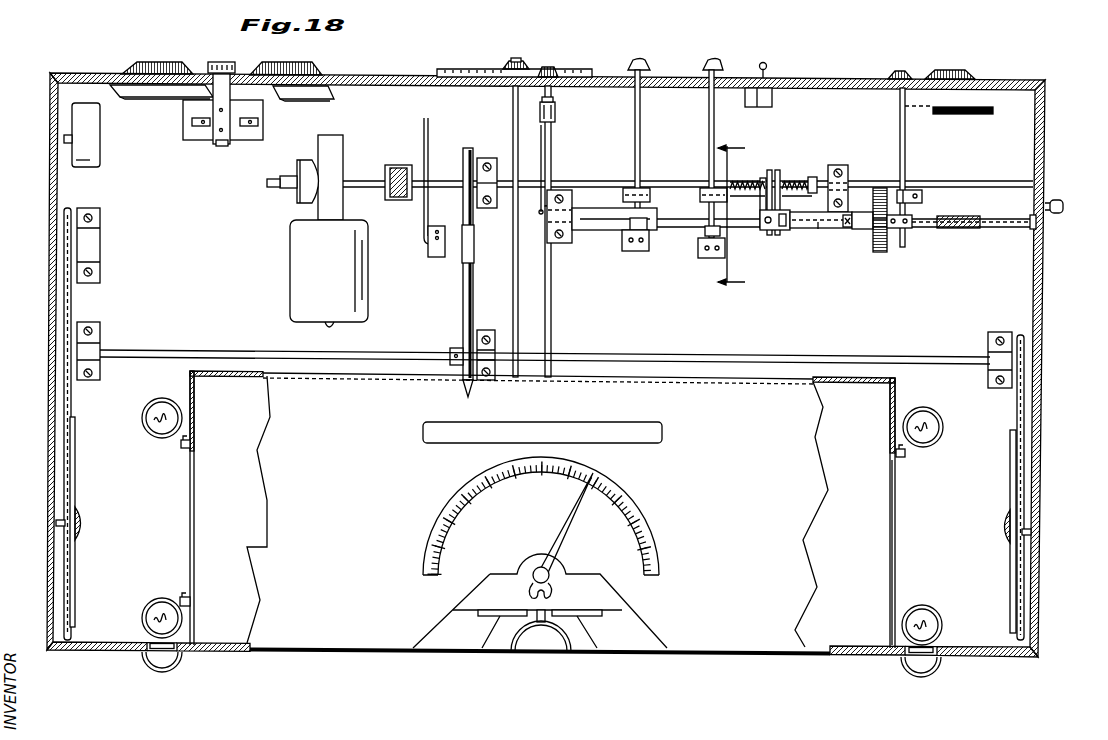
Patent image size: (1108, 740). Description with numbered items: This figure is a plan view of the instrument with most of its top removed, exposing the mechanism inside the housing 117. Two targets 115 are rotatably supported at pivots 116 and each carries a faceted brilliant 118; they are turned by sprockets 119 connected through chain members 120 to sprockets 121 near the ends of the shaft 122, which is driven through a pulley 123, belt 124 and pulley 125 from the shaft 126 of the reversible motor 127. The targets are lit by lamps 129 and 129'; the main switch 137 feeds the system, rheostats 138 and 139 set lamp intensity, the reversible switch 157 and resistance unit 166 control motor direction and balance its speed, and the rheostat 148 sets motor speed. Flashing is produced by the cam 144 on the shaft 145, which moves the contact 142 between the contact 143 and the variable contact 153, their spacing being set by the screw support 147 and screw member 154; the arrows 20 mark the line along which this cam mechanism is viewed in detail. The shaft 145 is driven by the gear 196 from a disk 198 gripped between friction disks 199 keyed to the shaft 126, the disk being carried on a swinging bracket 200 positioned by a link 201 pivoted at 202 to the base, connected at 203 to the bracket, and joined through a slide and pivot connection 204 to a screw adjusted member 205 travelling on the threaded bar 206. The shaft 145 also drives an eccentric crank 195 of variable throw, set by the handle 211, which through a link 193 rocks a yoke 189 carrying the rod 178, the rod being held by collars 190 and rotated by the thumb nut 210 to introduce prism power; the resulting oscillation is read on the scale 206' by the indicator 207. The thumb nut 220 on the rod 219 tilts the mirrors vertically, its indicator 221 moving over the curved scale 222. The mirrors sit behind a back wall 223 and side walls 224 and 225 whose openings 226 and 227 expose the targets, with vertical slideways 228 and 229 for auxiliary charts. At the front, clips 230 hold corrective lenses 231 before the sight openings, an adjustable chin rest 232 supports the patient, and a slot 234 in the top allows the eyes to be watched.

The spacing dimension 20 is at (737, 219).
The target 115 is at (77, 613).
The pivot 116 is at (56, 522).
The instrument housing 117 is at (50, 390).
The brilliant 118 is at (80, 525).
The sprocket 119 is at (68, 480).
The chain member 120 is at (753, 175).
The sprocket 121 is at (808, 180).
The shaft 122 is at (152, 350).
The pulley 123 is at (462, 327).
The belt 124 is at (462, 290).
The pulley 125 is at (462, 157).
The shaft 126 is at (590, 183).
The motor 127 is at (292, 253).
The lamp 129 is at (142, 508).
The lamp 129' is at (927, 510).
The main switch member 137 is at (770, 75).
The rheostat 138 is at (950, 100).
The rheostat 139 is at (130, 88).
The contact member 142 is at (625, 250).
The contact 143 is at (648, 238).
The cam member 144 is at (588, 228).
The shaft 145 is at (747, 232).
The screw support 147 is at (638, 122).
The rheostat 148 is at (315, 95).
The variable contact member 153 is at (641, 250).
The screw member 154 is at (709, 146).
The reversible switch 157 is at (200, 137).
The resistance unit 166 is at (100, 150).
The rod 178 is at (552, 308).
The yoke 189 is at (558, 118).
The collar 190 is at (560, 106).
The link member 193 is at (541, 160).
The eccentric crank member 195 is at (541, 213).
The gear 196 is at (878, 188).
The disk 198 is at (778, 237).
The friction disk member 199 is at (800, 187).
The bracket 200 is at (862, 232).
The link member 201 is at (818, 229).
The pivot 202 is at (847, 229).
The pivotal connection 203 is at (785, 214).
The combination slide and pivotal connection 204 is at (898, 232).
The screw adjusted member 205 is at (912, 230).
The threaded bar member 206 is at (932, 167).
The scale 206' is at (561, 513).
The indicator 207 is at (566, 537).
The thumb nut 210 is at (565, 50).
The handle member 211 is at (1065, 205).
The rod 219 is at (515, 305).
The thumb nut 220 is at (520, 58).
The indicator 221 is at (512, 66).
The curved scale 222 is at (445, 68).
The back wall 223 is at (230, 376).
The side wall 224 is at (192, 620).
The side wall 225 is at (892, 444).
The open area 226 is at (196, 474).
The open area 227 is at (891, 475).
The vertical slideway 228 is at (181, 445).
The vertical slideway 229 is at (905, 455).
The clip means 230 is at (503, 618).
The corrective lenses 231 is at (443, 648).
The chin rest 232 is at (547, 651).
The slot 234 is at (432, 435).